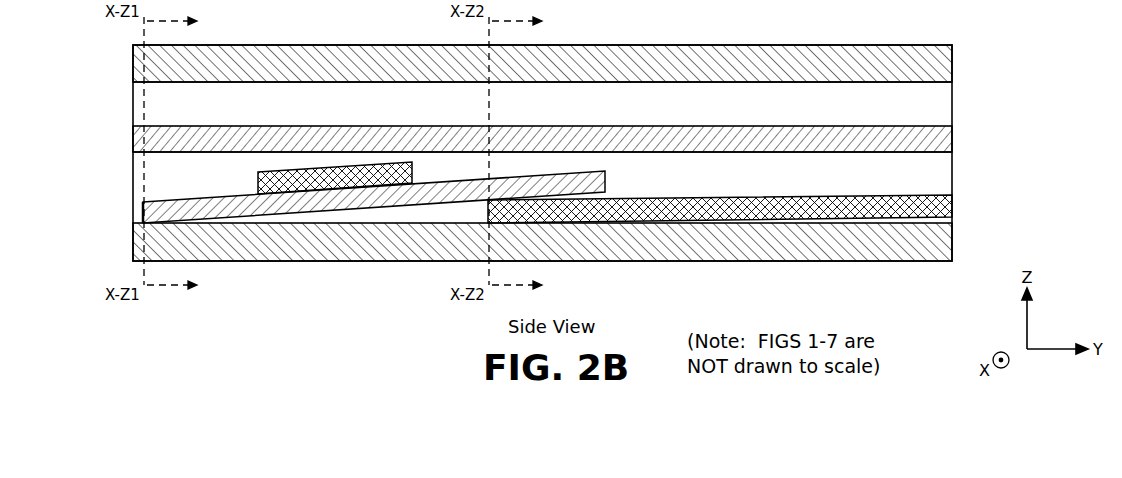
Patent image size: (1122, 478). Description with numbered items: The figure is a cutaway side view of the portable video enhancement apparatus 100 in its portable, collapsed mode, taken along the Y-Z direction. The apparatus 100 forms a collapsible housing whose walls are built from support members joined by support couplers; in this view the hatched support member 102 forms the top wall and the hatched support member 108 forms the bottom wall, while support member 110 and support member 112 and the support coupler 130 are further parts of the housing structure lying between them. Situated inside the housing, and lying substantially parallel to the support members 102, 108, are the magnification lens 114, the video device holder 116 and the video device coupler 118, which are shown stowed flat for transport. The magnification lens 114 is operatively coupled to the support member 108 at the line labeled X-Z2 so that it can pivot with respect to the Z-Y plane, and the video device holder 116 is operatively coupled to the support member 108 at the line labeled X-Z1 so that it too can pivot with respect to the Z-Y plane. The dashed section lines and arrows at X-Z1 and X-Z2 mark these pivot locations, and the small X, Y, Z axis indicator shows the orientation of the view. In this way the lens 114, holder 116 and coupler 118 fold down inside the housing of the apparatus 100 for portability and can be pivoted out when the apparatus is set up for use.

The portable video enhancement apparatus 100 is at (1040, 85).
The support member 102 is at (365, 57).
The support member 108 is at (718, 243).
The support member 110 is at (837, 181).
The support member 112 is at (325, 106).
The magnification lens 114 is at (823, 205).
The video device holder 116 is at (143, 207).
The video device coupler 118 is at (258, 177).
The support coupler 130 is at (325, 142).